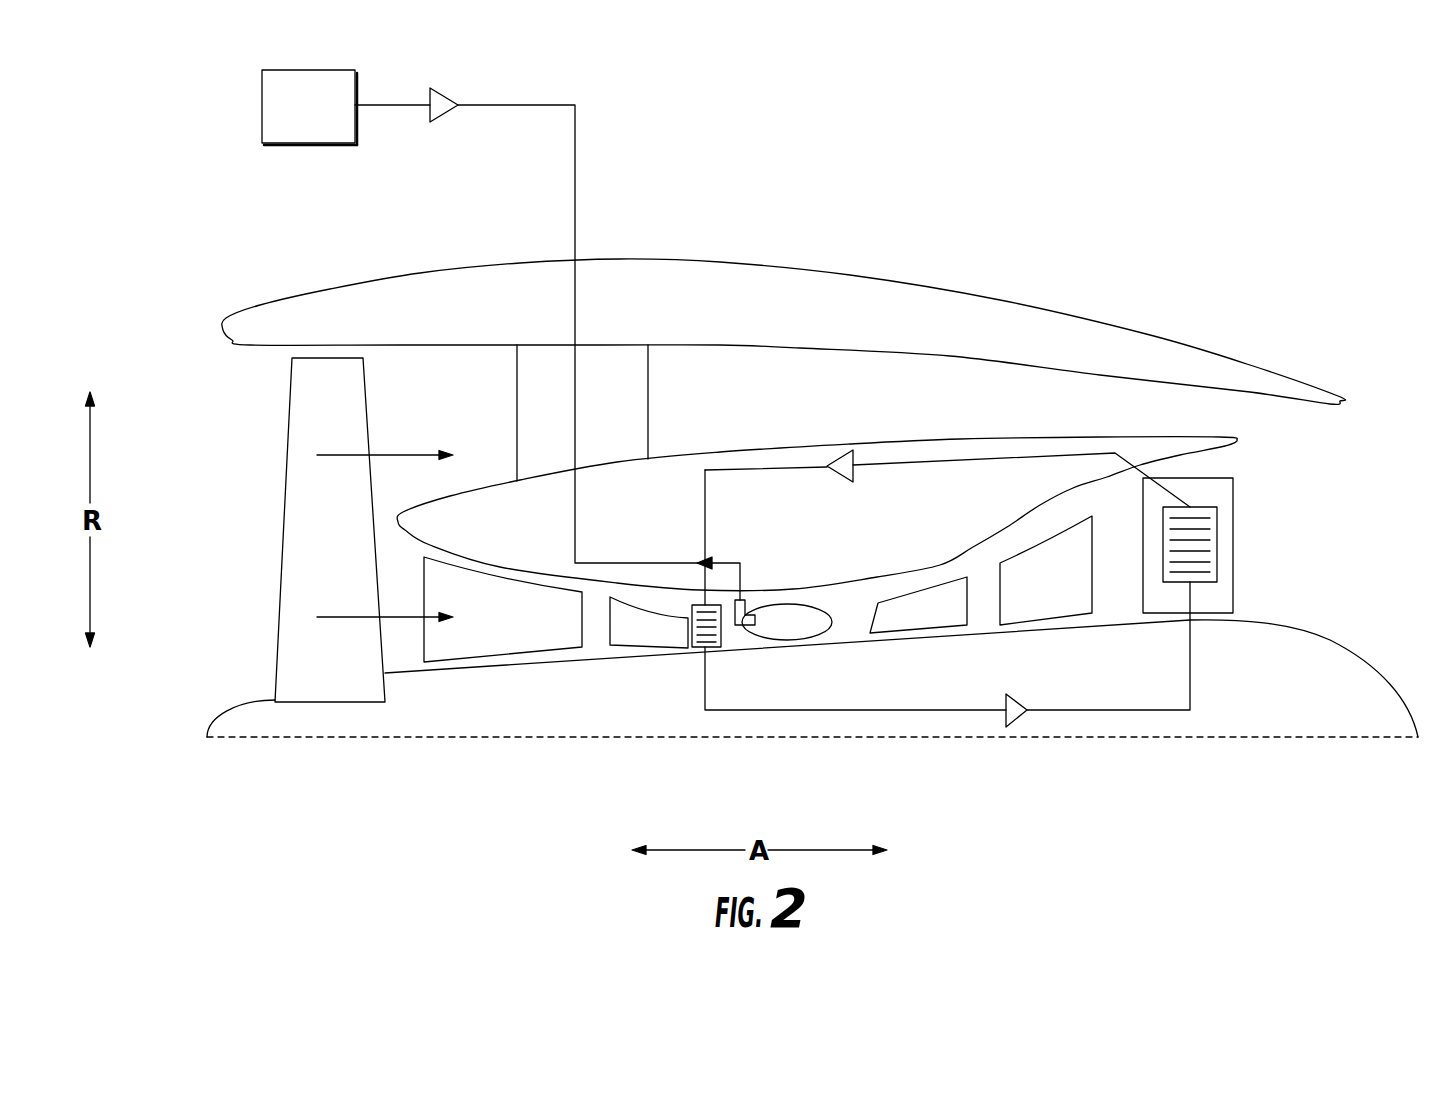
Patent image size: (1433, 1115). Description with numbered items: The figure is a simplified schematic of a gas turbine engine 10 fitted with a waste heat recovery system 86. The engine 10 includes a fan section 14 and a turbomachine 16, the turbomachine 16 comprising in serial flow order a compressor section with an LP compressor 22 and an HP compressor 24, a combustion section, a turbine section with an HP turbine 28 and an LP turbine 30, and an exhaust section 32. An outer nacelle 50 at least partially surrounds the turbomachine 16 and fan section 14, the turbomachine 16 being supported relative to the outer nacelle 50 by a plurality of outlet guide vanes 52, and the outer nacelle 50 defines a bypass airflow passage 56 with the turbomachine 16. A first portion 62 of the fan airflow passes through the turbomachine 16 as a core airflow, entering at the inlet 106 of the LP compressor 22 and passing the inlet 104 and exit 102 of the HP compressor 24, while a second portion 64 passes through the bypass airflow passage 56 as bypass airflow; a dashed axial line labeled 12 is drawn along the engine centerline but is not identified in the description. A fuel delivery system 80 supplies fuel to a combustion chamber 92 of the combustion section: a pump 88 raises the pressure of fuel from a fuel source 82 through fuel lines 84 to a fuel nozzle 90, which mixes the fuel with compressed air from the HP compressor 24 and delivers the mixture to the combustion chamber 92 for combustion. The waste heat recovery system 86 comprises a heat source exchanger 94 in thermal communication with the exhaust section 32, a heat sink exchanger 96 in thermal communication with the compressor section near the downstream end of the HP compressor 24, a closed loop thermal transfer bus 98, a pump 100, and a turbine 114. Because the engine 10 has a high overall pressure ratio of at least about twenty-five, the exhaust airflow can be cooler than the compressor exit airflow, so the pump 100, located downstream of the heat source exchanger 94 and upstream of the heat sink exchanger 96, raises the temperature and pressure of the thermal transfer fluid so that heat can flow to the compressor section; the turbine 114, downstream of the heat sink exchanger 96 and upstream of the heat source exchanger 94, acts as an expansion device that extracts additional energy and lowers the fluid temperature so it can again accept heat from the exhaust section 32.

The gas turbine engine 10 is at (968, 118).
The longitudinal centerline axis 12 is at (1313, 737).
The fan section 14 is at (264, 424).
The turbomachine 16 is at (740, 418).
The LP compressor 22 is at (515, 625).
The HP compressor 24 is at (652, 632).
The HP turbine 28 is at (925, 613).
The LP turbine 30 is at (1058, 595).
The exhaust section 32 is at (1233, 590).
The outer nacelle 50 is at (683, 290).
The outlet guide vanes 52 is at (517, 393).
The bypass airflow passage 56 is at (841, 400).
The first portion of airflow 62 is at (345, 617).
The second portion of airflow 64 is at (402, 455).
The fuel delivery system 80 is at (596, 74).
The fuel source 82 is at (320, 120).
The fuel lines 84 is at (575, 165).
The waste heat recovery system 86 is at (953, 452).
The pump 88 is at (447, 90).
The fuel nozzle 90 is at (750, 605).
The combustion chamber 92 is at (798, 610).
The heat source exchanger 94 is at (1218, 535).
The heat sink exchanger 96 is at (692, 655).
The thermal transfer bus 98 is at (1038, 457).
The pump 100 is at (840, 482).
The exit of HP compressor 102 is at (697, 670).
The inlet to HP compressor 104 is at (600, 660).
The inlet of LP compressor 106 is at (410, 655).
The turbine 114 is at (1020, 728).